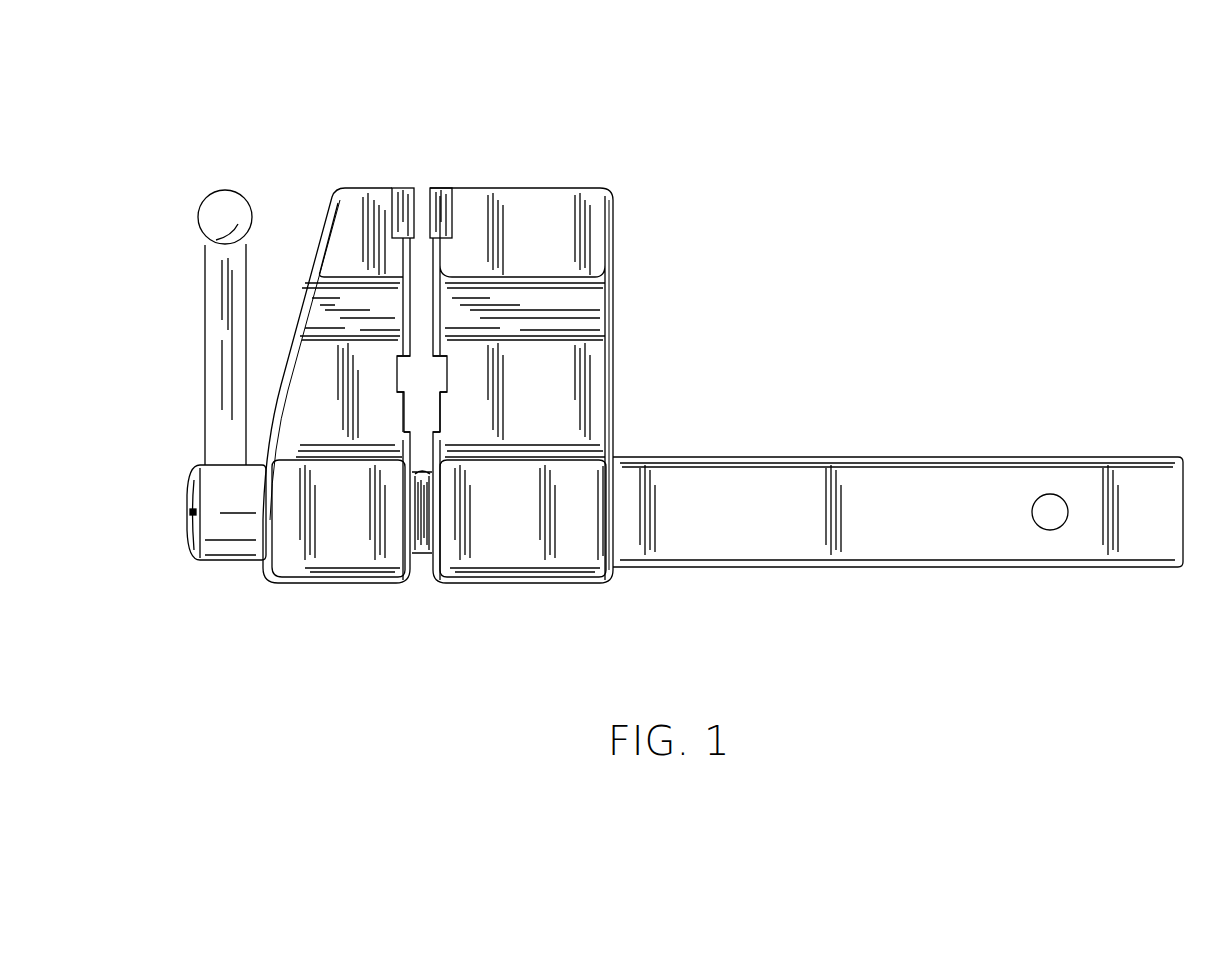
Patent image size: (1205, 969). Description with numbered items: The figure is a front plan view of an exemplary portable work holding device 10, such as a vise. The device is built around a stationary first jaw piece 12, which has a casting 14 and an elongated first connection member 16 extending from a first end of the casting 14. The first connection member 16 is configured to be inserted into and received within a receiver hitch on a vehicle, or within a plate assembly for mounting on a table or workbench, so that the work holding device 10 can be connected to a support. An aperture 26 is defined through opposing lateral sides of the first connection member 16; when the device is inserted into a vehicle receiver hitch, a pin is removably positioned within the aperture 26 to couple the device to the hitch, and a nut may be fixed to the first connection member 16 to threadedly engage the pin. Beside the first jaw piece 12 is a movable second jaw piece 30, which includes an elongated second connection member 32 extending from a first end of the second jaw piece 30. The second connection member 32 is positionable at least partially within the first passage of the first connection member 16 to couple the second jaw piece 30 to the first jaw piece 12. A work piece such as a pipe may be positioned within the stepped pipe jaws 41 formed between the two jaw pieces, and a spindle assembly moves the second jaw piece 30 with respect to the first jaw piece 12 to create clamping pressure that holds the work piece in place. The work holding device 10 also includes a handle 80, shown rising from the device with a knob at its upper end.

The portable work holding device 10 is at (880, 121).
The stationary first jaw piece 12 is at (616, 204).
The casting 14 is at (595, 388).
The first connection member 16 is at (927, 477).
The aperture 26 is at (1048, 494).
The movable second jaw piece 30 is at (347, 568).
The second connection member 32 is at (421, 553).
The pipe jaws 41 is at (442, 380).
The handle 80 is at (228, 497).